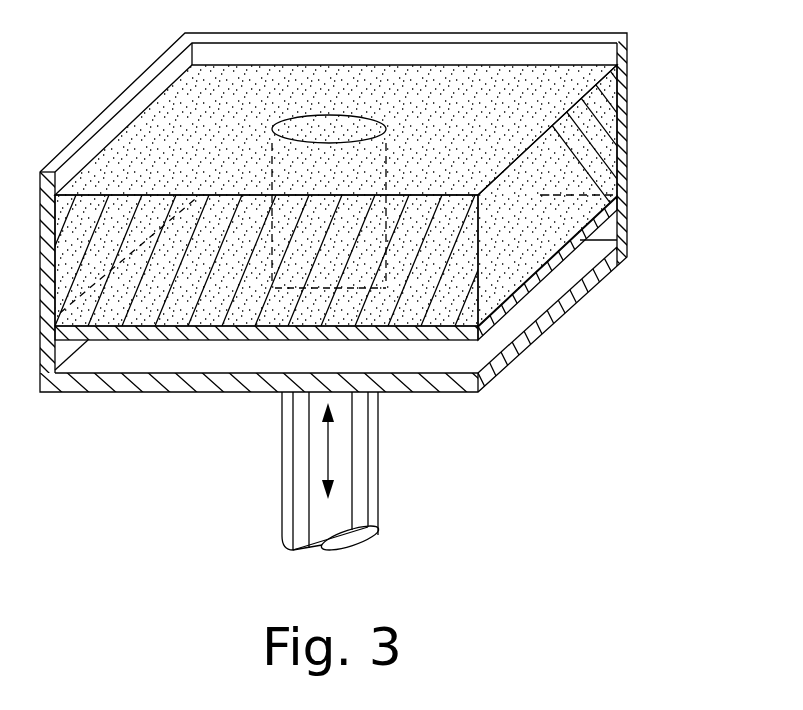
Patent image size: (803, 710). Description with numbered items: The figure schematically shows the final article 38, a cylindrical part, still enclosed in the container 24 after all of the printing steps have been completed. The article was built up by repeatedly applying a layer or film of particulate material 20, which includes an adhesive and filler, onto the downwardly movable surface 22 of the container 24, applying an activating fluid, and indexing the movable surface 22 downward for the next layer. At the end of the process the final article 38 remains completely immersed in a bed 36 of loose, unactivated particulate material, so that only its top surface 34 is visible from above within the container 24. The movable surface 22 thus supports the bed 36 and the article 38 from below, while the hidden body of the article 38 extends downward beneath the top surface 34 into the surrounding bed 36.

The particulate material 20 is at (455, 88).
The downwardly movable surface 22 is at (557, 258).
The container 24 is at (627, 182).
The top surface 34 is at (317, 120).
The bed of unactivated particulate material 36 is at (605, 122).
The final article 38 is at (400, 160).